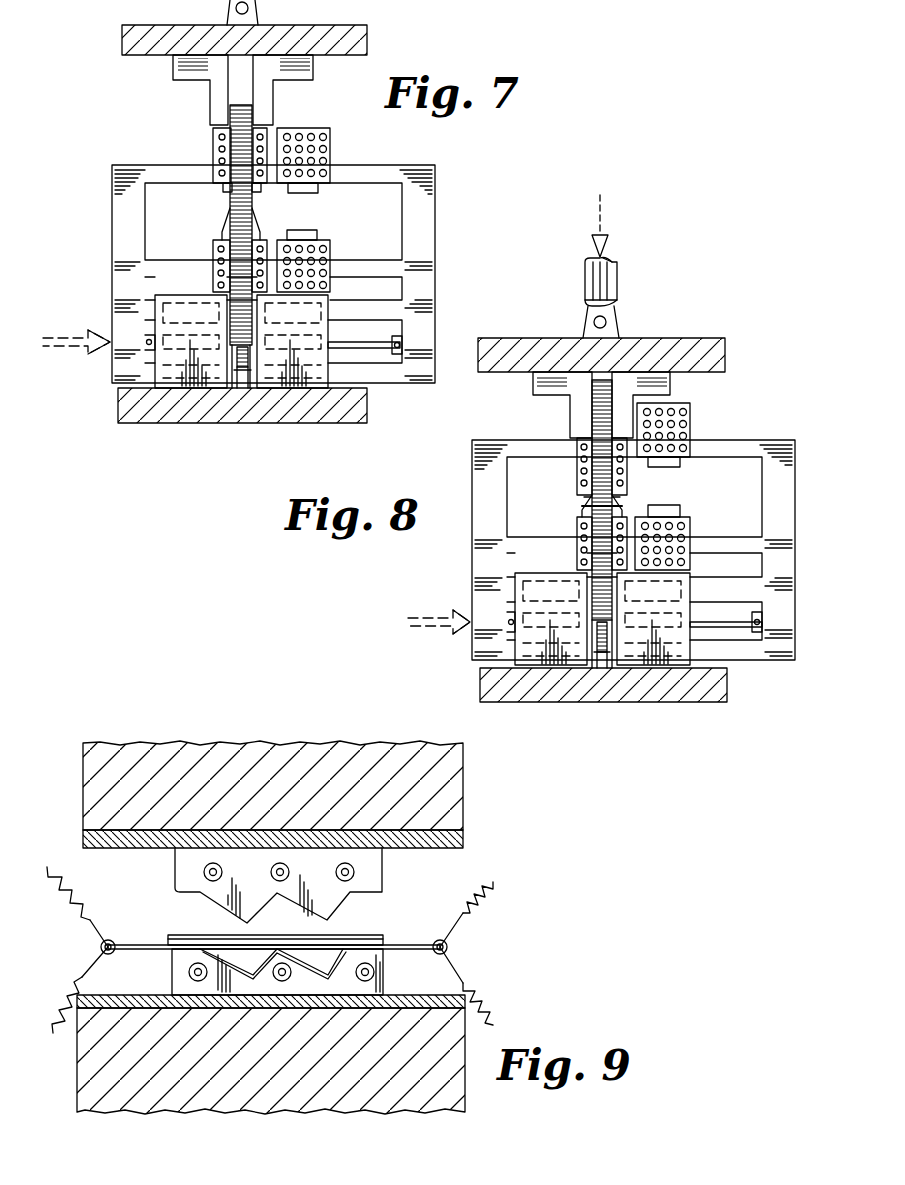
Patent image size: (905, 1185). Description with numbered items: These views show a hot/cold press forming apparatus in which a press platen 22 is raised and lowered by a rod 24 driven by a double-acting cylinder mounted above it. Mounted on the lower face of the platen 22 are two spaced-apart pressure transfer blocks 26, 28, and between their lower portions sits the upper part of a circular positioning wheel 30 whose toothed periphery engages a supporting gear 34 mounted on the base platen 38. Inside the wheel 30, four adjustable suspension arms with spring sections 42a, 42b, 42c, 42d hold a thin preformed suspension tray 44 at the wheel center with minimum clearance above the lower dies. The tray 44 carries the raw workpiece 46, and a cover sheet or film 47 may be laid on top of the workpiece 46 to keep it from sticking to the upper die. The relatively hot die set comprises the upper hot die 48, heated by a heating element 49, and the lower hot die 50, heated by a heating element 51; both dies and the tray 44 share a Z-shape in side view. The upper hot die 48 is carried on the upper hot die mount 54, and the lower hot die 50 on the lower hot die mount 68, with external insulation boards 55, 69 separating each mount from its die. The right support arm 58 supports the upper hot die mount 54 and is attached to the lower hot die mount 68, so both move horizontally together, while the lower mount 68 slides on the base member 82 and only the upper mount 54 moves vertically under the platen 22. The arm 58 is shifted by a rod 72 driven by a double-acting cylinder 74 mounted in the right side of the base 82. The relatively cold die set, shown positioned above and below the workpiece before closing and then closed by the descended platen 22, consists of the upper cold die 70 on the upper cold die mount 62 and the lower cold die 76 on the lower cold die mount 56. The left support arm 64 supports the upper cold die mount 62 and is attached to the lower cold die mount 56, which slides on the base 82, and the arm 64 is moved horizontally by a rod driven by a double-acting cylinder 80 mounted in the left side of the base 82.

In FIG. 7, the press platen 22 is at (321, 28).
In FIG. 8, the press platen 22 is at (666, 340).
In FIG. 7, the rod 24 is at (242, 12).
In FIG. 8, the rod 24 is at (619, 286).
In FIG. 7, the pressure transfer block 26 is at (175, 70).
In FIG. 8, the pressure transfer block 26 is at (533, 379).
In FIG. 7, the pressure transfer block 28 is at (312, 70).
In FIG. 8, the pressure transfer block 28 is at (671, 380).
In FIG. 7, the positioning wheel 30 is at (243, 125).
In FIG. 8, the positioning wheel 30 is at (600, 423).
In FIG. 7, the gear 34 is at (242, 367).
In FIG. 8, the gear 34 is at (605, 653).
In FIG. 7, the base platen 38 is at (362, 408).
In FIG. 8, the base platen 38 is at (728, 688).
In FIG. 8, the suspension tray 44 is at (624, 506).
In FIG. 9, the suspension tray 44 is at (135, 945).
In FIG. 9, the raw workpiece 46 is at (388, 947).
In FIG. 9, the cover sheet or film 47 is at (345, 934).
In FIG. 7, the upper hot die 48 is at (312, 192).
In FIG. 8, the upper hot die 48 is at (681, 463).
In FIG. 9, the upper hot die 48 is at (384, 871).
In FIG. 9, the heating element 49 is at (283, 862).
In FIG. 7, the lower hot die 50 is at (318, 235).
In FIG. 8, the lower hot die 50 is at (681, 509).
In FIG. 9, the lower hot die 50 is at (385, 975).
In FIG. 9, the heating element 51 is at (283, 982).
In FIG. 7, the upper hot die mount 54 is at (330, 150).
In FIG. 8, the upper hot die mount 54 is at (691, 408).
In FIG. 9, the upper hot die mount 54 is at (458, 783).
In FIG. 9, the external insulation board 55 is at (458, 840).
In FIG. 7, the lower cold die mount 56 is at (214, 253).
In FIG. 8, the lower cold die mount 56 is at (578, 529).
In FIG. 7, the right support arm 58 is at (436, 196).
In FIG. 8, the right support arm 58 is at (767, 441).
In FIG. 7, the upper cold die mount 62 is at (265, 145).
In FIG. 8, the upper cold die mount 62 is at (628, 472).
In FIG. 7, the left support arm 64 is at (113, 205).
In FIG. 8, the left support arm 64 is at (474, 559).
In FIG. 7, the lower hot die mount 68 is at (325, 250).
In FIG. 8, the lower hot die mount 68 is at (690, 528).
In FIG. 9, the lower hot die mount 68 is at (465, 1094).
In FIG. 9, the external insulation board 69 is at (74, 1003).
In FIG. 7, the upper cold die 70 is at (224, 187).
In FIG. 8, the upper cold die 70 is at (590, 501).
In FIG. 7, the rod 72 is at (372, 342).
In FIG. 8, the rod 72 is at (733, 607).
In FIG. 7, the double-acting cylinder 74 is at (330, 353).
In FIG. 8, the double-acting cylinder 74 is at (684, 668).
In FIG. 7, the lower cold die 76 is at (222, 236).
In FIG. 8, the lower cold die 76 is at (582, 513).
In FIG. 7, the double-acting cylinder 80 is at (158, 357).
In FIG. 8, the base member 82 is at (676, 604).
In FIG. 9, the spring 42a is at (69, 907).
In FIG. 9, the spring 42b is at (497, 907).
In FIG. 9, the spring 42c is at (498, 1003).
In FIG. 9, the spring 42d is at (69, 988).